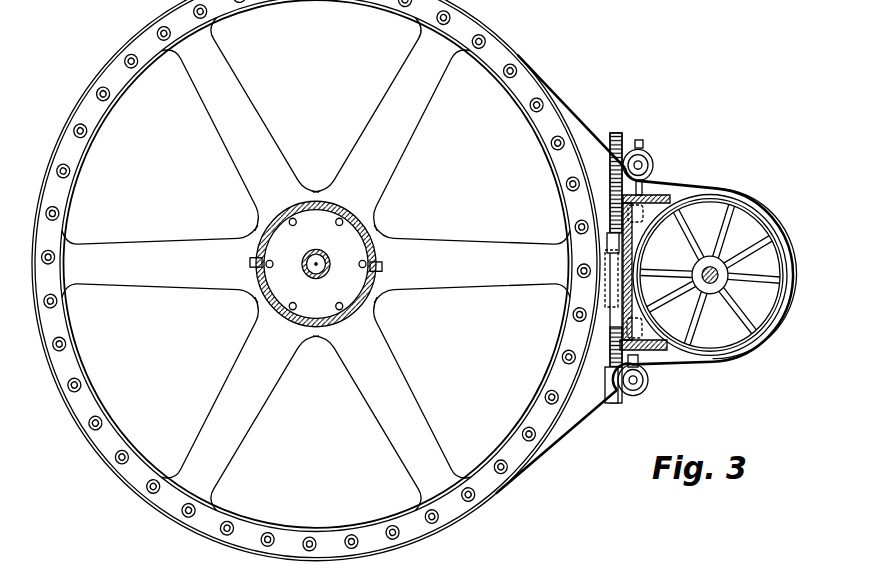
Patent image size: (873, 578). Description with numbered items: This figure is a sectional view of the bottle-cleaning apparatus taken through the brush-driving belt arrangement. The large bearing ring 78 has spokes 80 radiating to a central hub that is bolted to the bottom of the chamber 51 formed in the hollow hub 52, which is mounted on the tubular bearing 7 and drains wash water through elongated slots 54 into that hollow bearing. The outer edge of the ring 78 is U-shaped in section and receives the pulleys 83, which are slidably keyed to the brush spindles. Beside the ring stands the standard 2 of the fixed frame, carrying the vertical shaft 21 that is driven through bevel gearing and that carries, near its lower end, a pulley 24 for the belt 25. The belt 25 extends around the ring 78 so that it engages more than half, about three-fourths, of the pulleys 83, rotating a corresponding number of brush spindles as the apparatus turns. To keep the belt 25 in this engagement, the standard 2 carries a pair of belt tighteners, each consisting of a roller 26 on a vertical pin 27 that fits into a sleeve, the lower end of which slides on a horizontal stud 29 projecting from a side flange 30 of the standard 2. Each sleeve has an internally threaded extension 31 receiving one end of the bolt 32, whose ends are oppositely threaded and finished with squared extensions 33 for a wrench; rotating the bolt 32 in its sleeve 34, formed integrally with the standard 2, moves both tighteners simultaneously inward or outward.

The standard 2 is at (633, 233).
The tubular extension 7 is at (328, 256).
The vertical shaft 21 is at (720, 270).
The pulley 24 is at (763, 324).
The belt 25 is at (788, 299).
The roller 26 is at (652, 163).
The vertical pin 27 is at (653, 172).
The horizontal stud 29 is at (640, 149).
The side flange 30 is at (662, 203).
The extension 31 is at (615, 153).
The bolt 32 is at (612, 224).
The squared extension 33 is at (618, 139).
The sleeve 34 is at (613, 289).
The chamber 51 is at (316, 265).
The hollow hub 52 is at (300, 263).
The elongated slots 54 is at (316, 252).
The bearing ring 78 is at (316, 280).
The spokes 80 is at (132, 22).
The pulleys 83 is at (572, 404).